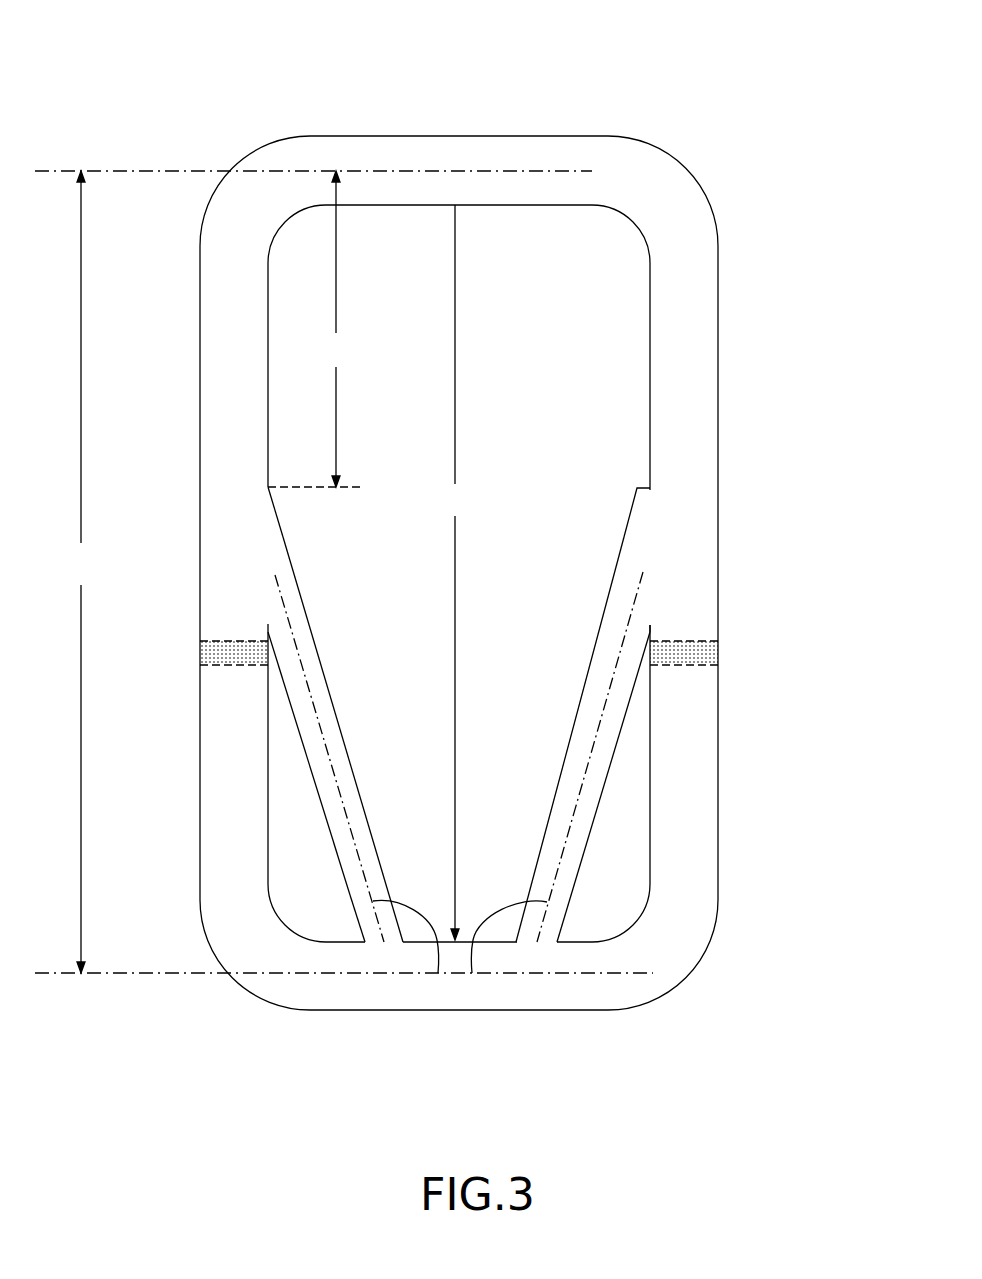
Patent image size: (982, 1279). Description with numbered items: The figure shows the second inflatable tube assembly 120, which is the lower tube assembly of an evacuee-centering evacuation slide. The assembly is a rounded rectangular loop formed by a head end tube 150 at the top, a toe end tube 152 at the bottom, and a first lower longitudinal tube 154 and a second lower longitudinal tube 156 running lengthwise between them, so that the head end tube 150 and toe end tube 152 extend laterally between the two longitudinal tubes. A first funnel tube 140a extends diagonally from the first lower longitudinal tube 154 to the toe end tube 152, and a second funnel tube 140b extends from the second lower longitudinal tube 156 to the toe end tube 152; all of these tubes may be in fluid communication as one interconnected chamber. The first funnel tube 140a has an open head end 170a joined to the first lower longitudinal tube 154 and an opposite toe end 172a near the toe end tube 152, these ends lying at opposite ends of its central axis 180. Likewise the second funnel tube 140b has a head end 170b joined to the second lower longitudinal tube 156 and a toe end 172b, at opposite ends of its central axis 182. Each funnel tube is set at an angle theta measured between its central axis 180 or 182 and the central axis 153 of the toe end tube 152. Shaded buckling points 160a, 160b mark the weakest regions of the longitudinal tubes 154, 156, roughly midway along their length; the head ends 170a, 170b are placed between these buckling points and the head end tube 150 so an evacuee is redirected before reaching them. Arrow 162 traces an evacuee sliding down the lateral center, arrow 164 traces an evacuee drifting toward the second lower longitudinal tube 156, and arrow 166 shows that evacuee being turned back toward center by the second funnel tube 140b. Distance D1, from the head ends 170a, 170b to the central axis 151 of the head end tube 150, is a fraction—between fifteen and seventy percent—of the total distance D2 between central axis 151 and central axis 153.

The second inflatable tube assembly 120 is at (449, 560).
The head end tube 150 is at (462, 567).
The central axis of head end tube 151 is at (375, 170).
The toe end tube 152 is at (463, 1003).
The central axis of toe end tube 153 is at (523, 975).
The first lower longitudinal tube 154 is at (222, 385).
The second lower longitudinal tube 156 is at (702, 470).
The buckling point 160a is at (222, 660).
The buckling point 160b is at (710, 648).
The arrow 162 is at (459, 572).
The arrow 164 is at (573, 217).
The arrow 166 is at (513, 925).
The head end of first funnel tube 170a is at (276, 507).
The head end of second funnel tube 170b is at (637, 488).
The toe end of first funnel tube 172a is at (366, 943).
The toe end of second funnel tube 172b is at (557, 943).
The first funnel tube 140a is at (343, 790).
The second funnel tube 140b is at (655, 764).
The central axis of first funnel tube 180 is at (327, 743).
The central axis of second funnel tube 182 is at (578, 822).
The distance D1 is at (315, 329).
The total distance D2 is at (79, 572).